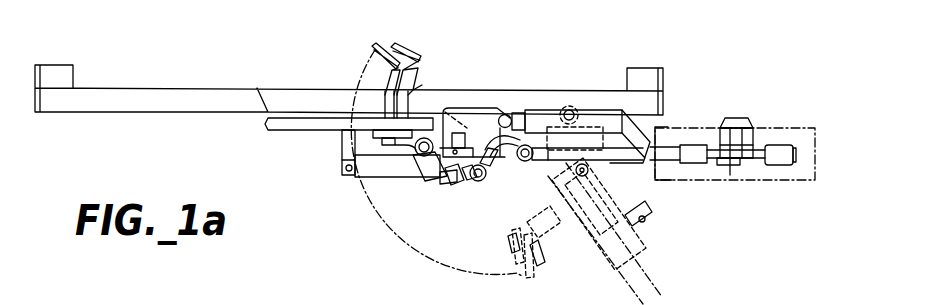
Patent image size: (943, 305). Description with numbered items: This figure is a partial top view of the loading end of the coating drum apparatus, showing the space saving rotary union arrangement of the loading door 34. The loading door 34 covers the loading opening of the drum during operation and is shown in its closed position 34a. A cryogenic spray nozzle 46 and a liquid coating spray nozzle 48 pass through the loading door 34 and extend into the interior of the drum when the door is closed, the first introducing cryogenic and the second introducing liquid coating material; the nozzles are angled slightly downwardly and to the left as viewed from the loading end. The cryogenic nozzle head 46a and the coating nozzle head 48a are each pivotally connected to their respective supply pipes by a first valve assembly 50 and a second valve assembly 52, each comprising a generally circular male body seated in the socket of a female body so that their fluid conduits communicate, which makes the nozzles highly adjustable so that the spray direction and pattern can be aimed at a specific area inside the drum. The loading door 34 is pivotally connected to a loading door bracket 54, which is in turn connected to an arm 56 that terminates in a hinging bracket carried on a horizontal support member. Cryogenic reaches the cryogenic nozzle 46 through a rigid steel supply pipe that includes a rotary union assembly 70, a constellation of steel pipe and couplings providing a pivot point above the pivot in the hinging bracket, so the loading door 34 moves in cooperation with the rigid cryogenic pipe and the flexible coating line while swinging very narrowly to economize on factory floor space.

The loading door 34 is at (650, 302).
The closed position of the loading door 34a is at (263, 122).
The cryogenic spray nozzle 46 is at (392, 65).
The cryogenic nozzle head 46a is at (380, 43).
The liquid coating spray nozzle 48 is at (427, 62).
The coating nozzle head 48a is at (397, 43).
The first valve assembly 50 is at (533, 260).
The second valve assembly 52 is at (512, 243).
The loading door bracket 54 is at (628, 232).
The arm 56 is at (347, 140).
The rotary union assembly 70 is at (530, 170).